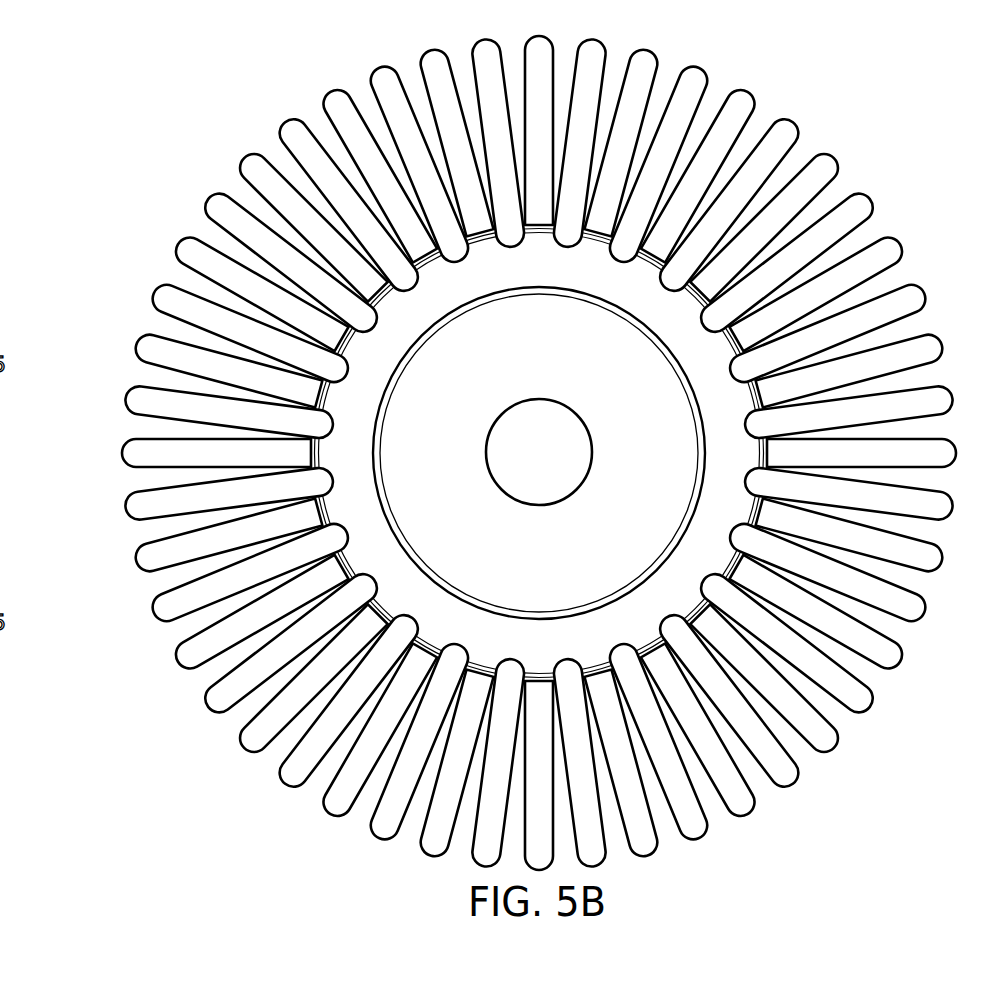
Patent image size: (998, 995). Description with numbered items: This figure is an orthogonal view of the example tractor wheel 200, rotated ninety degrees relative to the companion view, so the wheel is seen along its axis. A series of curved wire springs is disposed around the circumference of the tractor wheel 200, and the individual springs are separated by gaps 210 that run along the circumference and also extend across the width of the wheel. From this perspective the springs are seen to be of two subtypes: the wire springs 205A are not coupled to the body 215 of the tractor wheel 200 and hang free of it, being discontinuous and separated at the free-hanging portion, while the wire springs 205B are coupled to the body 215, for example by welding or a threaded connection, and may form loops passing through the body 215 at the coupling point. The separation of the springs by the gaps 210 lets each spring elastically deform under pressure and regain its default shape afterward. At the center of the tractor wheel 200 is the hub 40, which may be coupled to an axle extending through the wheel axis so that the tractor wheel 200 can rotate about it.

The tractor wheel 200 is at (208, 88).
The gaps 210 is at (312, 112).
The wire springs 205A is at (902, 246).
The wire springs 205B is at (812, 94).
The body 215 is at (560, 363).
The hub 40 is at (560, 500).